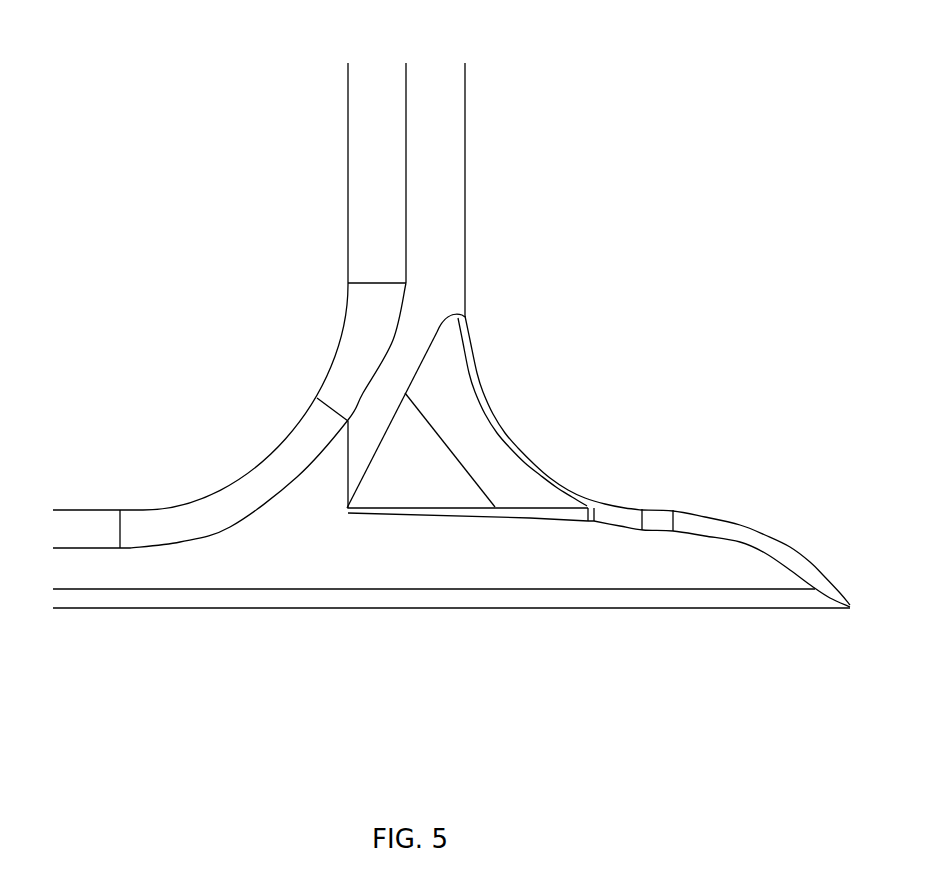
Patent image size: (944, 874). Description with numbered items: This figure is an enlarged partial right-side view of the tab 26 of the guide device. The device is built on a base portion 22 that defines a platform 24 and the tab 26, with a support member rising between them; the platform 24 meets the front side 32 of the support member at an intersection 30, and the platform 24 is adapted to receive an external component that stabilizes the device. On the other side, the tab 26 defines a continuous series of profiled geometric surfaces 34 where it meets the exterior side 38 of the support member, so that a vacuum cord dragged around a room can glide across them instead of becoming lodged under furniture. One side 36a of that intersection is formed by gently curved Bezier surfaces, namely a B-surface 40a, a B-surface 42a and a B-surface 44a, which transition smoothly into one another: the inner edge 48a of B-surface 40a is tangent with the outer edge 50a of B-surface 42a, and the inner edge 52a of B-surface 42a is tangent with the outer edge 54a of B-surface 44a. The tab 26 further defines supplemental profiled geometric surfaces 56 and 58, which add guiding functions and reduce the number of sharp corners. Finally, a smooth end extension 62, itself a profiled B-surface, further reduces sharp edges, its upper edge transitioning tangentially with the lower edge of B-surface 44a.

The base portion 22 is at (232, 627).
The platform 24 is at (158, 608).
The tab 26 is at (807, 608).
The intersection 30 is at (270, 388).
The front side 32 is at (362, 115).
The continuous series of profiled geometric surfaces 34 is at (524, 433).
The one side of the intersection 36a is at (612, 330).
The exterior side 38 is at (452, 98).
The B-surface 40a is at (395, 487).
The B-surface 42a is at (523, 487).
The B-surface 44a is at (553, 481).
The inner edge 48a is at (458, 478).
The outer edge 50a is at (445, 447).
The inner edge 52a is at (464, 384).
The outer edge 54a is at (468, 375).
The supplemental profiled geometric surface 56 is at (653, 518).
The supplemental profiled geometric surface 58 is at (697, 570).
The end extension 62 is at (787, 555).